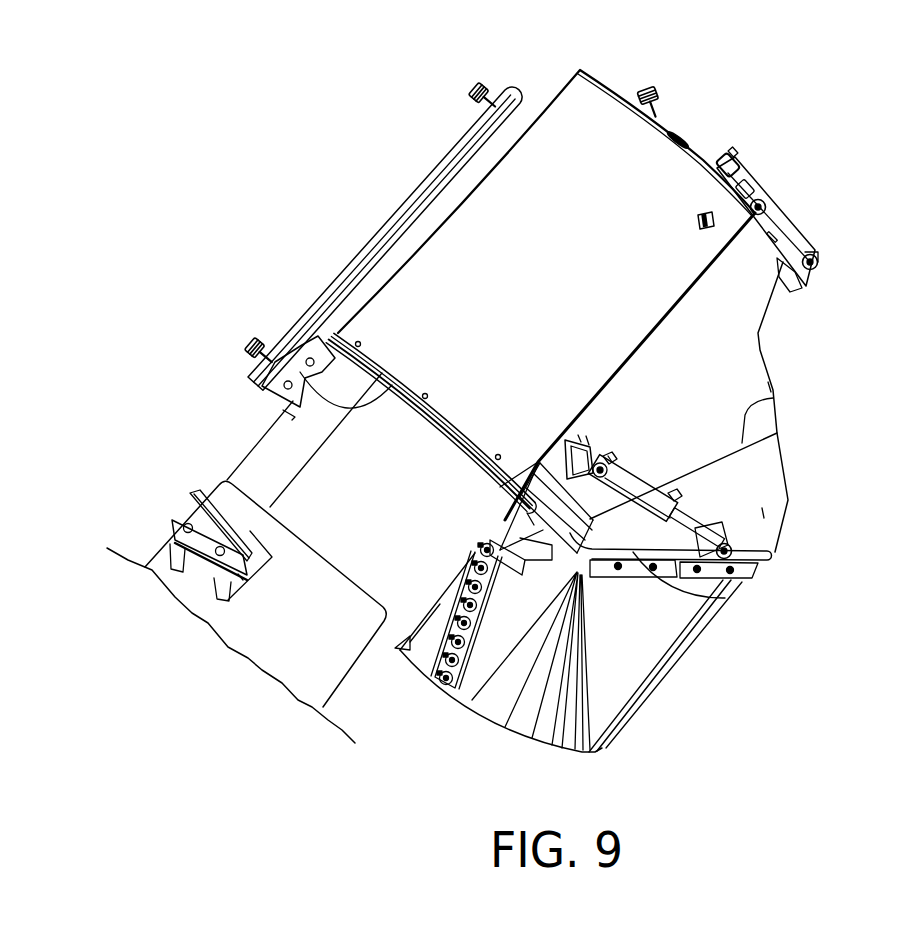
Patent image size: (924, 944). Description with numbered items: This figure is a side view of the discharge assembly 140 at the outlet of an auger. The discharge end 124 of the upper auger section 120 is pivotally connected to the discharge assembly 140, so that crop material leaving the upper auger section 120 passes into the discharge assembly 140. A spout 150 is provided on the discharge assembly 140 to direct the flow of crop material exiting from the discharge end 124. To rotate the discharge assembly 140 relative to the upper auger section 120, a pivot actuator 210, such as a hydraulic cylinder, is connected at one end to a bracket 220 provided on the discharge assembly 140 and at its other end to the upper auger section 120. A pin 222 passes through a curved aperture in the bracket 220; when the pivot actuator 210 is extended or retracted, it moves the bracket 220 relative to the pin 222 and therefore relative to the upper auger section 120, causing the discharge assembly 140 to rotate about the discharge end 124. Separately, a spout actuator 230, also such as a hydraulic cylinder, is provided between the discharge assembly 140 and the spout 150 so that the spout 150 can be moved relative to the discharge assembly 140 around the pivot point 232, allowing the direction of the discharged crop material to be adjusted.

The upper auger section 120 is at (387, 477).
The discharge end 124 is at (320, 365).
The discharge assembly 140 is at (720, 367).
The spout 150 is at (672, 678).
The pivot actuator 210 is at (785, 213).
The bracket 220 is at (706, 158).
The pin 222 is at (735, 153).
The spout actuator 230 is at (603, 517).
The pivot point 232 is at (648, 578).